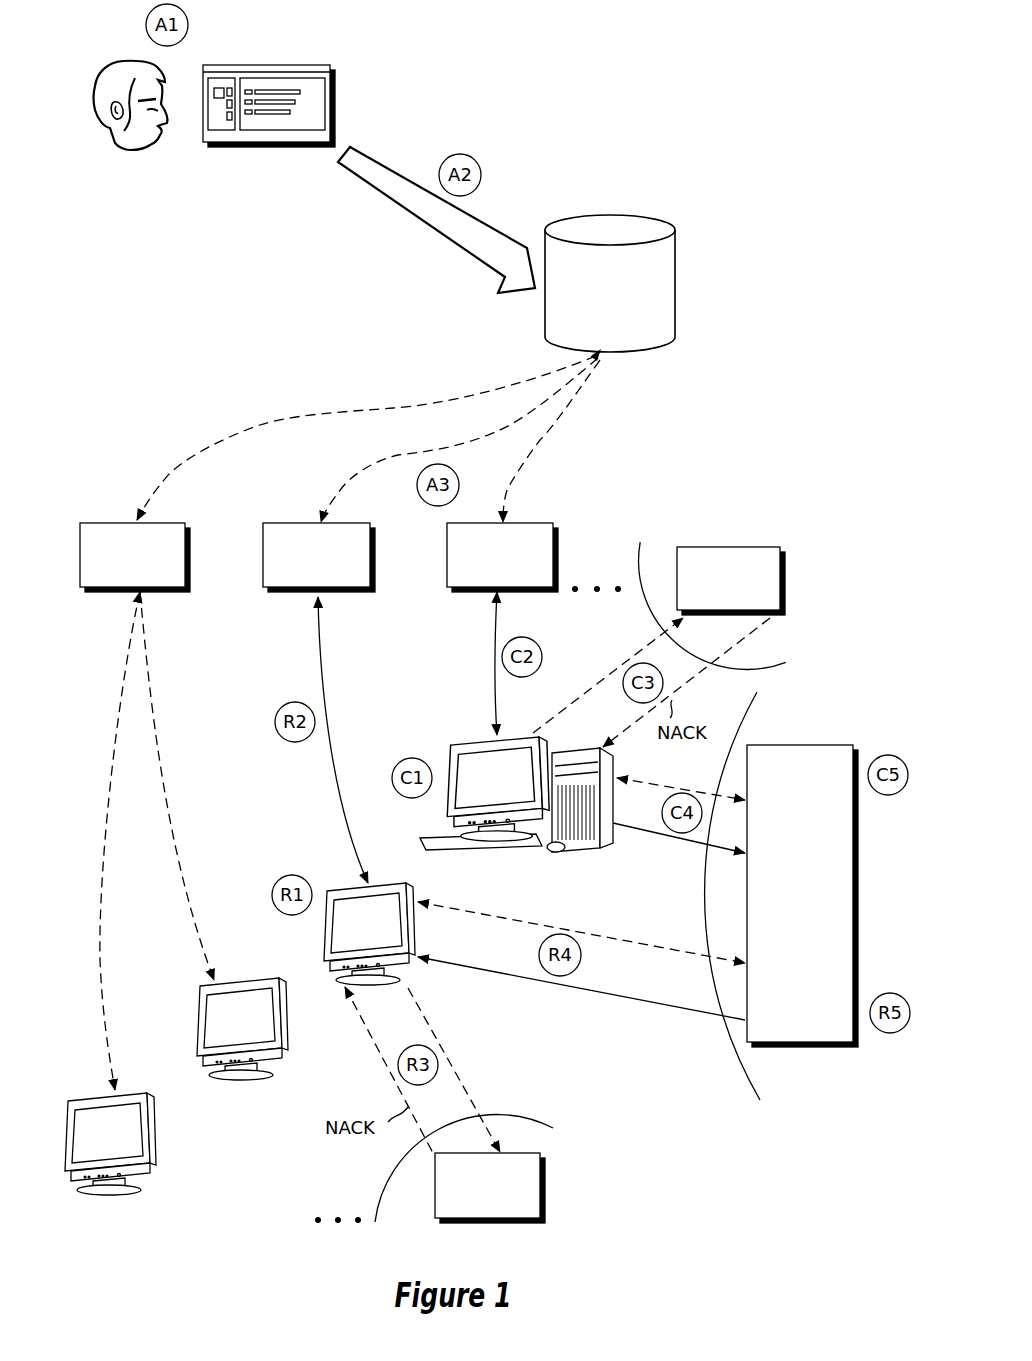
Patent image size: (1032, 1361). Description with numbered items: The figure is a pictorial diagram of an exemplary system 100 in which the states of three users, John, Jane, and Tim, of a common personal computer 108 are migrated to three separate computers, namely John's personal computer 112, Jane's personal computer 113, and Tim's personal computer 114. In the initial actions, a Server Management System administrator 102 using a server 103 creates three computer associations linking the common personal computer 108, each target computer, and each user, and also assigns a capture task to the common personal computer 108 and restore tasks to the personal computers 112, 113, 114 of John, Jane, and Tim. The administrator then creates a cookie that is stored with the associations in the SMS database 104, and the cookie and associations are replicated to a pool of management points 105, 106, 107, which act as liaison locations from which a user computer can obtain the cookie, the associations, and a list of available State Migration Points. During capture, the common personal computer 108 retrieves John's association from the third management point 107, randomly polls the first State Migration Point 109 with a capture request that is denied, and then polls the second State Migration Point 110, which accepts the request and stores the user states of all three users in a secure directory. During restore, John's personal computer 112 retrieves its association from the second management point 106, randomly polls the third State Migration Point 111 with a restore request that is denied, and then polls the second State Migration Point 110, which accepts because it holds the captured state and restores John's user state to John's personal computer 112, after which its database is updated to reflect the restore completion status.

The system 100 is at (236, 254).
The Server Management System administrator 102 is at (110, 62).
The server 103 is at (308, 62).
The SMS database 104 is at (676, 276).
The management point MPA 105 is at (97, 593).
The management point MPB 106 is at (281, 593).
The management point MPC 107 is at (461, 593).
The common personal computer 108 is at (466, 740).
The State Migration Point SMPA 109 is at (770, 546).
The State Migration Point SMPB 110 is at (788, 1048).
The State Migration Point SMPC 111 is at (546, 1175).
The PC-John personal computer 112 is at (345, 888).
The PC-Jane personal computer 113 is at (198, 1008).
The PC-Tim personal computer 114 is at (160, 1128).